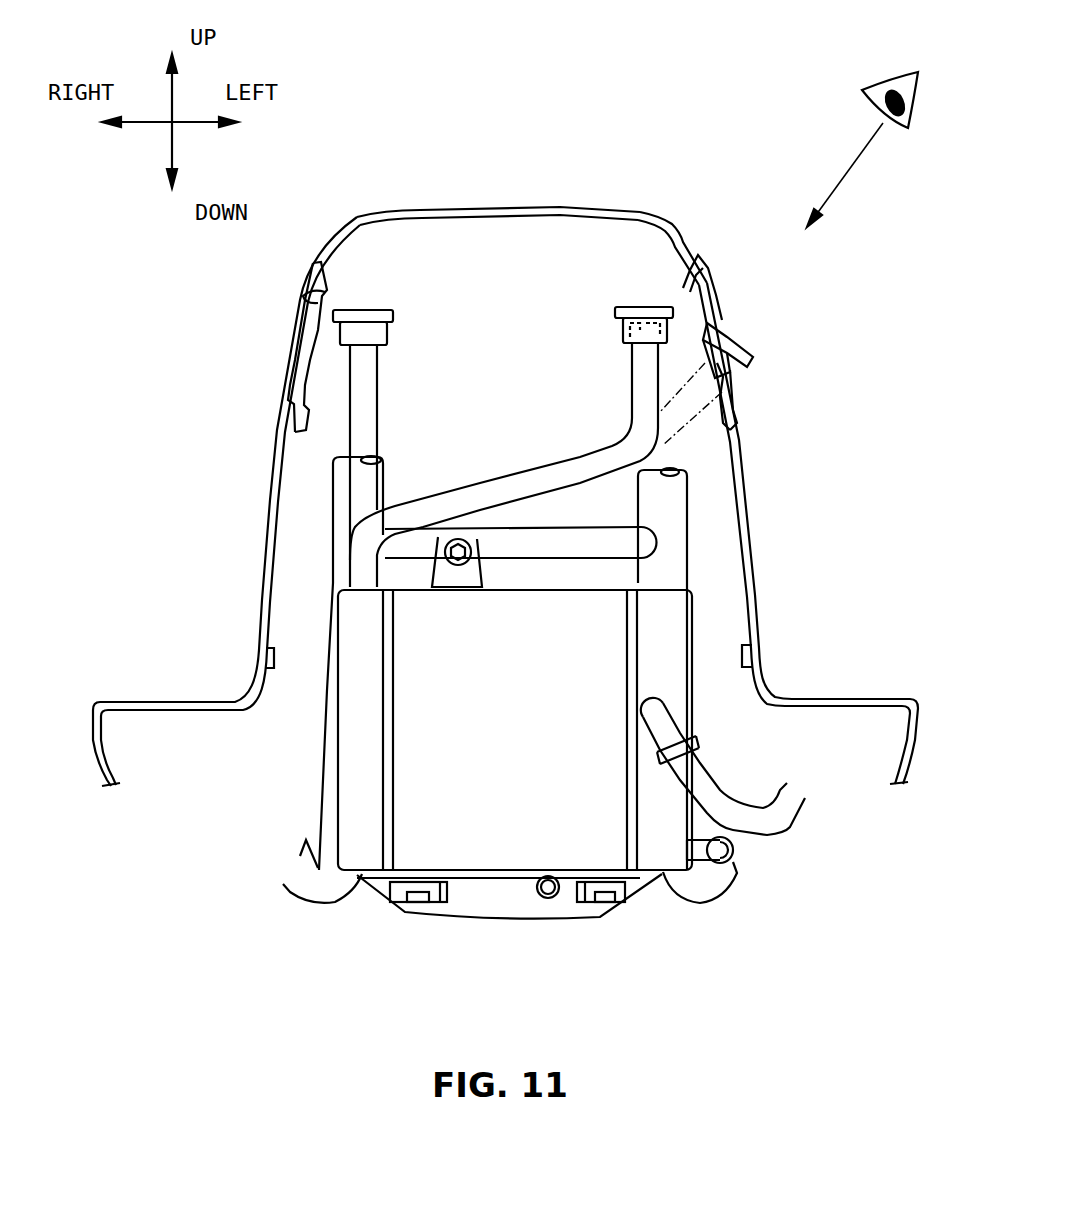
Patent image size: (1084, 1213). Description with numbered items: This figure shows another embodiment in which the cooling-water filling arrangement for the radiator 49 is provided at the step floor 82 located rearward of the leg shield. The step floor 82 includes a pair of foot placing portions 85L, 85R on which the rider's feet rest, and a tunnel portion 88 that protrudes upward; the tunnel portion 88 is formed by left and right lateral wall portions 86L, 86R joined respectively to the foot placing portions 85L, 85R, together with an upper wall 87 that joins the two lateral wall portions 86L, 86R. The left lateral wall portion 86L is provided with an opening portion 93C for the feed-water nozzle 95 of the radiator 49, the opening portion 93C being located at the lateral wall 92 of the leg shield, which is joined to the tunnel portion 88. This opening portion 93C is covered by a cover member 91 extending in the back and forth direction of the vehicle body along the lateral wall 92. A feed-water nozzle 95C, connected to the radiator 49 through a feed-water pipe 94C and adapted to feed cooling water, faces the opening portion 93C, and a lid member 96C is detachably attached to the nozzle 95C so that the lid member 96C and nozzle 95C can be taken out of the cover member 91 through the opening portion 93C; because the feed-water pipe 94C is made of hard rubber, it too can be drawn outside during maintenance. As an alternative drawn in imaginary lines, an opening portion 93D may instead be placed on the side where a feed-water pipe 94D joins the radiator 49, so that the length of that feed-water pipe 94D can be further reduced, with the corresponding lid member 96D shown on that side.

The radiator 49 is at (497, 848).
The step floor 82 is at (522, 192).
The upper wall 87 is at (580, 207).
The tunnel portion 88 is at (651, 201).
The left foot placing portion 85L is at (842, 696).
The right foot placing portion 85R is at (164, 702).
The left lateral wall portion 86L is at (752, 522).
The right lateral wall portion 86R is at (265, 520).
The cover member 91 is at (723, 322).
The lateral wall 92 is at (748, 362).
The opening portion 93C is at (713, 302).
The opening portion 93D is at (300, 305).
The feed-water pipe 94C is at (642, 390).
The feed-water pipe 94D is at (380, 403).
The feed-water nozzle 95 is at (707, 397).
The feed-water nozzle 95C is at (632, 327).
The lid member 96C is at (638, 307).
The right pipe joint 96D is at (377, 307).